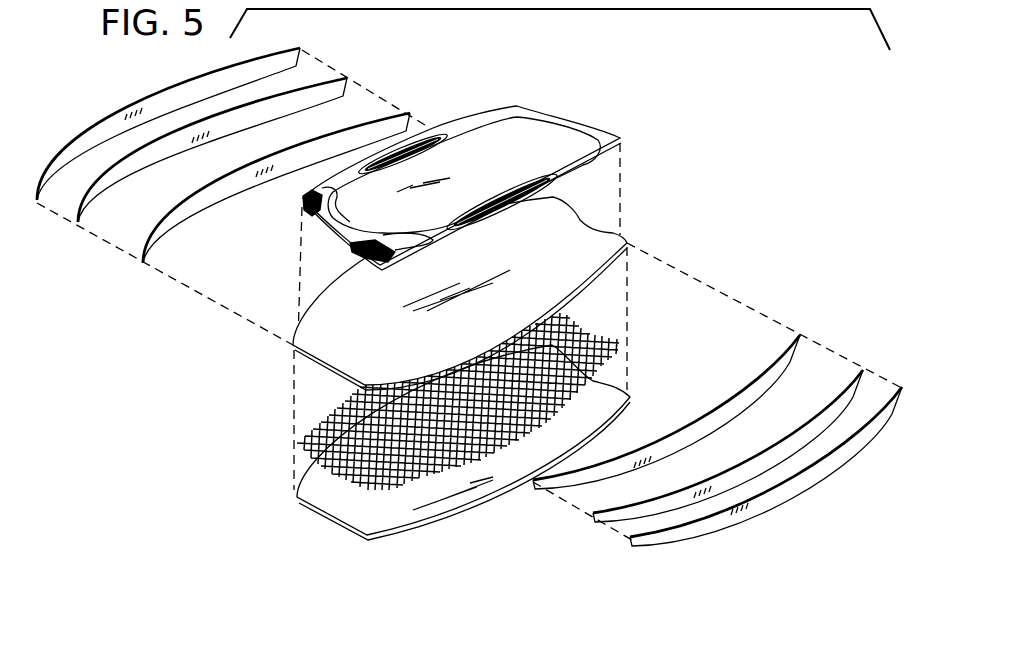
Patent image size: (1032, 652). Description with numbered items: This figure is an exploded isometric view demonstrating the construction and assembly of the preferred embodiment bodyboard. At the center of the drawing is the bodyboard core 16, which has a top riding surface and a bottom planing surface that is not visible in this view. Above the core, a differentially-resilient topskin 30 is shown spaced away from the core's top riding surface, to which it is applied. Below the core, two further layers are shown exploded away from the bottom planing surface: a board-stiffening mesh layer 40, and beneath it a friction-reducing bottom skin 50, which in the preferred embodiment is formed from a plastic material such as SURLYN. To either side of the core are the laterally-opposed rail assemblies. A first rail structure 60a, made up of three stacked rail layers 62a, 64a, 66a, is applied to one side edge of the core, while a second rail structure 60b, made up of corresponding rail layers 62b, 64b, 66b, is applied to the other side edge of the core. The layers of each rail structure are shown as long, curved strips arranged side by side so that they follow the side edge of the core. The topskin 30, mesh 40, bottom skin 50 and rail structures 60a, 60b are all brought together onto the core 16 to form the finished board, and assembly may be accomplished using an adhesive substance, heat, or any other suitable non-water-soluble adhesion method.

The bodyboard core 16 is at (625, 227).
The topskin 30 is at (590, 113).
The mesh layer 40 is at (297, 450).
The bottom skin 50 is at (317, 513).
The first rail structure 60a is at (717, 410).
The second rail structure 60b is at (223, 188).
The rail layer 62a is at (728, 386).
The rail layer 62b is at (228, 196).
The rail layer 64a is at (770, 441).
The rail layer 64b is at (181, 150).
The rail layer 66a is at (790, 484).
The rail layer 66b is at (94, 137).